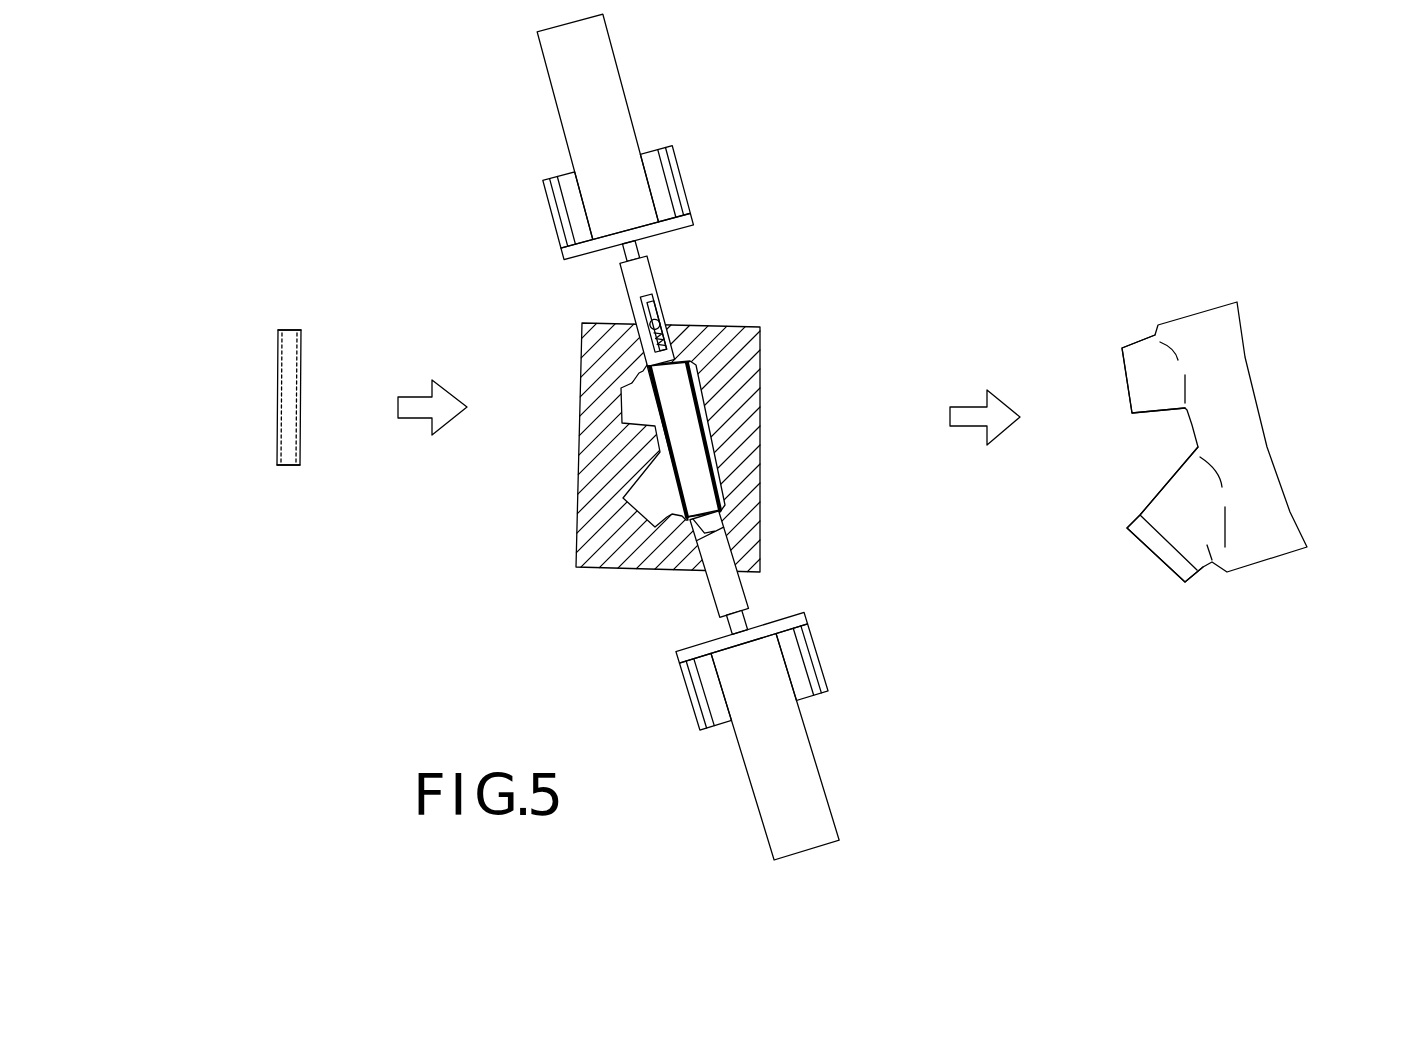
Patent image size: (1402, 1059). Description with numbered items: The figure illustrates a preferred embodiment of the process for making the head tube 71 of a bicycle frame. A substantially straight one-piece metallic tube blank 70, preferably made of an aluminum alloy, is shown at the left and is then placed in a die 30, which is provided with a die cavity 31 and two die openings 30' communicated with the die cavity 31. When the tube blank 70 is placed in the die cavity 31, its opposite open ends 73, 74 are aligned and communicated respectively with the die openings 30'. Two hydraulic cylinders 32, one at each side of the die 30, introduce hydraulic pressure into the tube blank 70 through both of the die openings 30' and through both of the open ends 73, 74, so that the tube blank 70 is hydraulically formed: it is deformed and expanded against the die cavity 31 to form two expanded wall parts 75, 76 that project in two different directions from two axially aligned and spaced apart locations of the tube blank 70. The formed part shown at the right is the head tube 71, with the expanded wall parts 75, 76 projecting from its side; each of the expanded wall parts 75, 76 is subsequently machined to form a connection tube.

The die 30 is at (730, 422).
The die openings 30' is at (757, 394).
The die cavity 31 is at (653, 505).
The hydraulic cylinders 32 is at (631, 107).
The tube blank 70 is at (272, 405).
The head tube 71 is at (1273, 460).
The open end 73 is at (292, 330).
The open end 74 is at (283, 466).
The expanded wall part 75 is at (1155, 335).
The expanded wall part 76 is at (1210, 560).